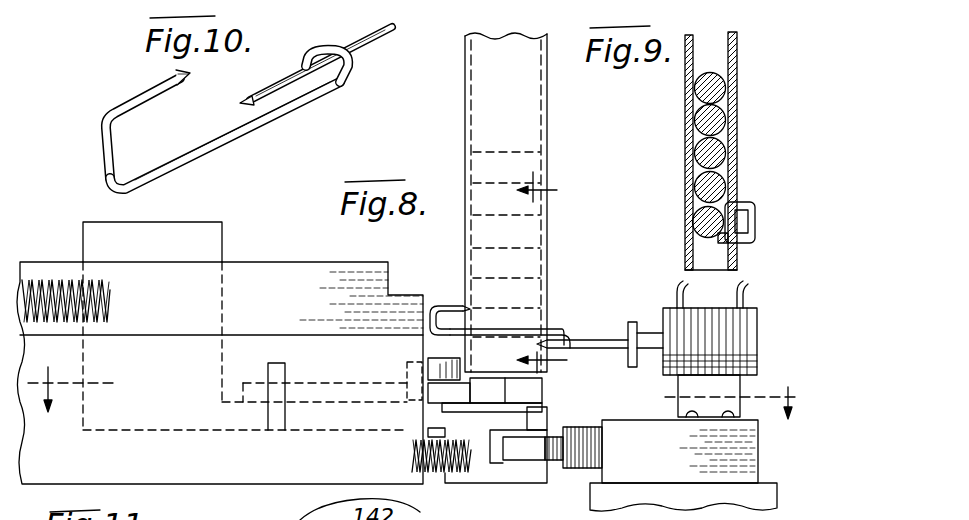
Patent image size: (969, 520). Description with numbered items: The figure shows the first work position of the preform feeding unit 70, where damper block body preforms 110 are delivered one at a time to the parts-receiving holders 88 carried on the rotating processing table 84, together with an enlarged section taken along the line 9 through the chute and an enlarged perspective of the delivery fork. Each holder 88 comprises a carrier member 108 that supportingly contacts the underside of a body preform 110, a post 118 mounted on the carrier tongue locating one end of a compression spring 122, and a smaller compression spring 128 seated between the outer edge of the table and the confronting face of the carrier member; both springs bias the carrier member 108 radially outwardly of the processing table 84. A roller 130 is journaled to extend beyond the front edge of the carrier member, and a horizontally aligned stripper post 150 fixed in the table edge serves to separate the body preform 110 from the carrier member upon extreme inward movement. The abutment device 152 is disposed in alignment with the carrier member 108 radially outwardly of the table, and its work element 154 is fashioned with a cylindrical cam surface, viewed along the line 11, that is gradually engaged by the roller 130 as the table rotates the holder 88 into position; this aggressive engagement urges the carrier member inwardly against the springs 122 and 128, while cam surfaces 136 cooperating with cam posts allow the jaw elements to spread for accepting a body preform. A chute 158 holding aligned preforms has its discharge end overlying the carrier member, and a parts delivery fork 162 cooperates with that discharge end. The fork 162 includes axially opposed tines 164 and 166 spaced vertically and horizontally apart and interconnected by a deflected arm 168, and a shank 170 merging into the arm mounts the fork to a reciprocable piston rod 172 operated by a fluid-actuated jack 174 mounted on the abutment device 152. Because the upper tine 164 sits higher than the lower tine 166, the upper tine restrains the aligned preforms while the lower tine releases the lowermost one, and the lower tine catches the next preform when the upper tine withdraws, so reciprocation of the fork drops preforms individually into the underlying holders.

In FIG. 8, the section line 9- 9 is at (550, 273).
In FIG. 8, the section line 11- 11 is at (416, 381).
In FIG. 8, the preform feeding unit 70 is at (588, 203).
In FIG. 8, the processing table 84 is at (112, 466).
In FIG. 8, the parts-receiving holder 88 is at (291, 256).
In FIG. 8, the carrier member 108 is at (548, 415).
In FIG. 9, the damper block body preform 110 is at (720, 200).
In FIG. 8, the damper block body preform 110 is at (538, 267).
In FIG. 8, the post 118 is at (180, 235).
In FIG. 8, the compression spring 122 is at (50, 275).
In FIG. 8, the compression spring 128 is at (410, 455).
In FIG. 8, the roller 130 is at (515, 447).
In FIG. 8, the cam surface 136 is at (270, 413).
In FIG. 8, the stripper post 150 is at (440, 354).
In FIG. 8, the abutment device 152 is at (796, 452).
In FIG. 8, the work element 154 is at (581, 462).
In FIG. 9, the chute 158 is at (740, 88).
In FIG. 8, the chute 158 is at (462, 145).
In FIG. 10, the parts delivery fork 162 is at (205, 98).
In FIG. 9, the parts delivery fork 162 is at (763, 206).
In FIG. 8, the parts delivery fork 162 is at (500, 280).
In FIG. 10, the tine 164 is at (116, 108).
In FIG. 9, the tine 164 is at (724, 203).
In FIG. 8, the tine 164 is at (447, 304).
In FIG. 10, the tine 166 is at (283, 84).
In FIG. 9, the tine 166 is at (718, 247).
In FIG. 8, the tine 166 is at (552, 314).
In FIG. 10, the deflected arm 168 is at (250, 128).
In FIG. 10, the shank 170 is at (357, 43).
In FIG. 8, the shank 170 is at (584, 339).
In FIG. 8, the piston rod 172 is at (648, 336).
In FIG. 8, the fluid-actuated jack 174 is at (736, 340).